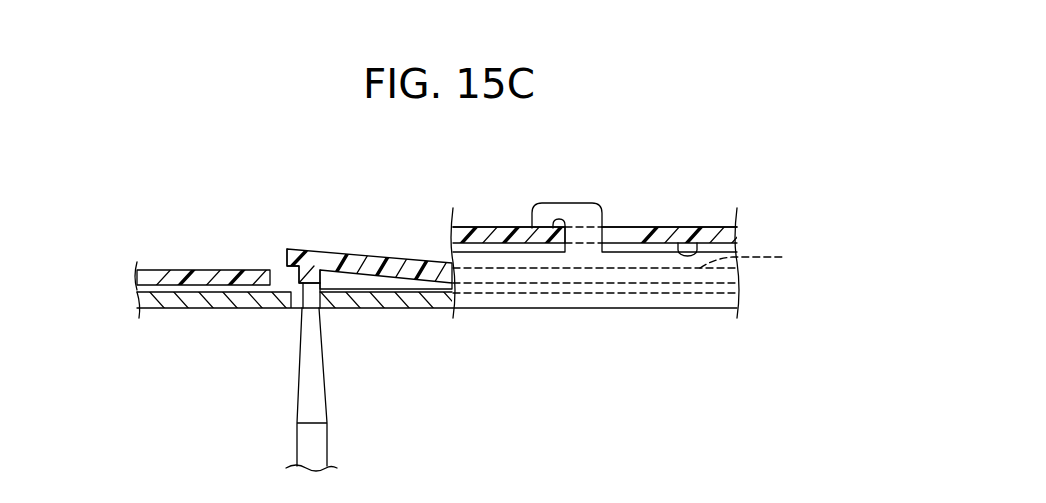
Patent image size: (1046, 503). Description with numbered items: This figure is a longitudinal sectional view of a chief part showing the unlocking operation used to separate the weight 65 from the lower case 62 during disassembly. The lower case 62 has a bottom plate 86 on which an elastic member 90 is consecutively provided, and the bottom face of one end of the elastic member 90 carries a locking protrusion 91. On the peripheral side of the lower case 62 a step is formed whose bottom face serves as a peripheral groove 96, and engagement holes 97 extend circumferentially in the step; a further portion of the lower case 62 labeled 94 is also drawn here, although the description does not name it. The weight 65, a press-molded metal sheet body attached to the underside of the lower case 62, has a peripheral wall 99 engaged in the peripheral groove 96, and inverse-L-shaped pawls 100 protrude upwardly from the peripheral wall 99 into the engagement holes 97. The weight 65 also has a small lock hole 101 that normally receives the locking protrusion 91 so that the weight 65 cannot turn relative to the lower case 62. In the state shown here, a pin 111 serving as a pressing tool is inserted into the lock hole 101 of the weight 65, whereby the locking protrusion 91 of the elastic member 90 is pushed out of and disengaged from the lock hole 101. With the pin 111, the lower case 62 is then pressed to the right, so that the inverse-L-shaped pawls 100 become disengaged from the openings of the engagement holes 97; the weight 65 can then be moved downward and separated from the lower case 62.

The lower case 62 is at (178, 268).
The weight 65 is at (392, 302).
The bottom plate 86 is at (758, 250).
The elastic member 90 is at (374, 265).
The locking protrusion 91 is at (301, 278).
The first cover plate 94 is at (493, 228).
The peripheral groove 96 is at (697, 243).
The engagement holes 97 is at (643, 233).
The peripheral wall 99 is at (602, 298).
The inverse-L-shaped pawls 100 is at (566, 205).
The lock hole 101 is at (303, 313).
The pin 111 is at (317, 385).